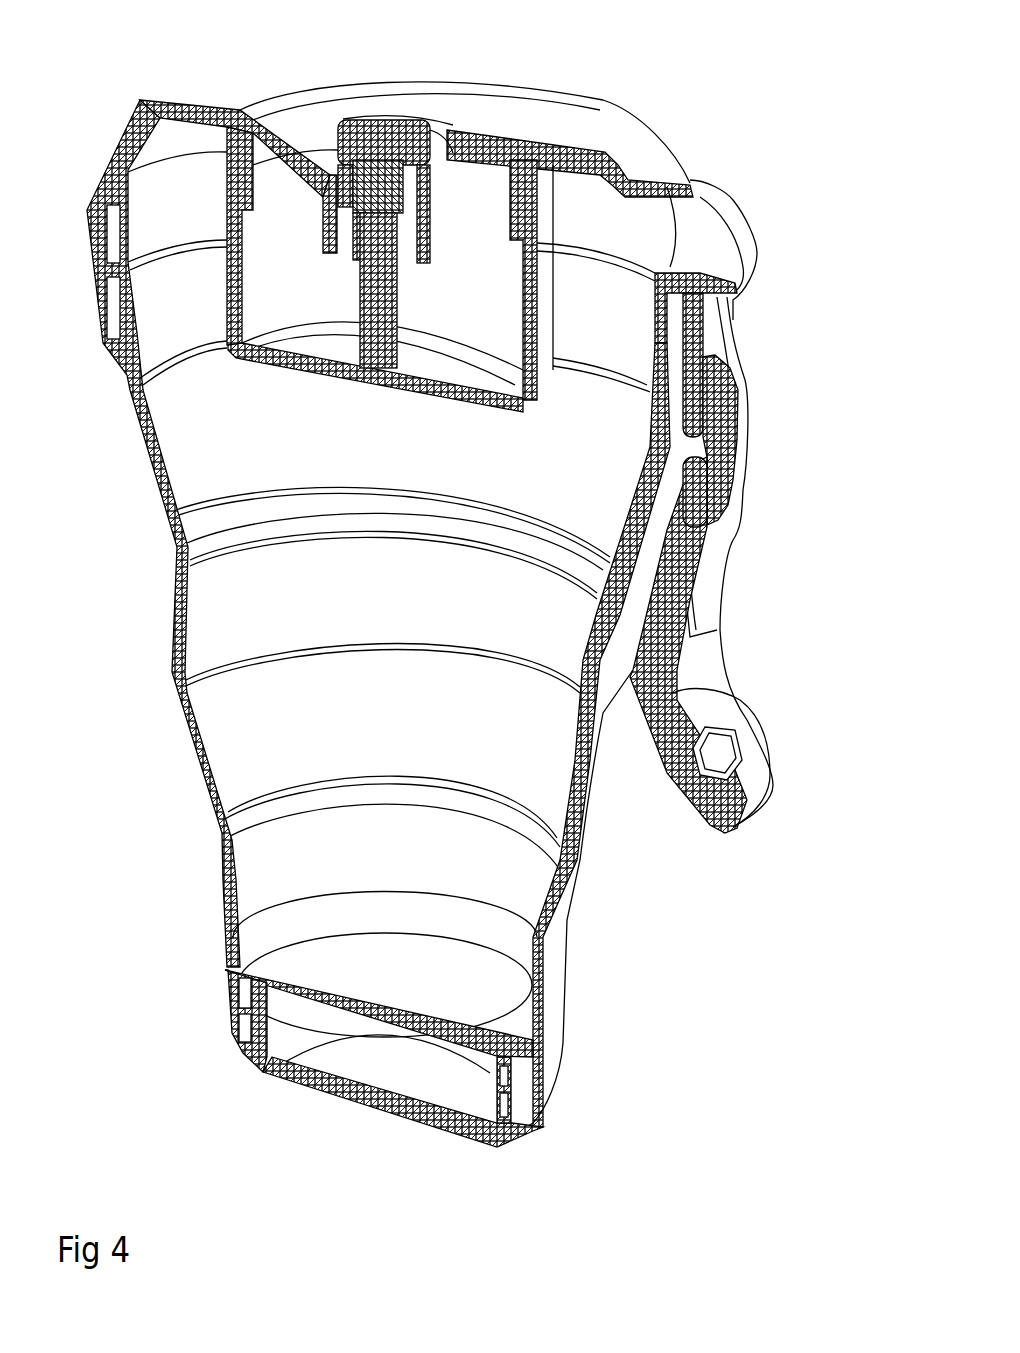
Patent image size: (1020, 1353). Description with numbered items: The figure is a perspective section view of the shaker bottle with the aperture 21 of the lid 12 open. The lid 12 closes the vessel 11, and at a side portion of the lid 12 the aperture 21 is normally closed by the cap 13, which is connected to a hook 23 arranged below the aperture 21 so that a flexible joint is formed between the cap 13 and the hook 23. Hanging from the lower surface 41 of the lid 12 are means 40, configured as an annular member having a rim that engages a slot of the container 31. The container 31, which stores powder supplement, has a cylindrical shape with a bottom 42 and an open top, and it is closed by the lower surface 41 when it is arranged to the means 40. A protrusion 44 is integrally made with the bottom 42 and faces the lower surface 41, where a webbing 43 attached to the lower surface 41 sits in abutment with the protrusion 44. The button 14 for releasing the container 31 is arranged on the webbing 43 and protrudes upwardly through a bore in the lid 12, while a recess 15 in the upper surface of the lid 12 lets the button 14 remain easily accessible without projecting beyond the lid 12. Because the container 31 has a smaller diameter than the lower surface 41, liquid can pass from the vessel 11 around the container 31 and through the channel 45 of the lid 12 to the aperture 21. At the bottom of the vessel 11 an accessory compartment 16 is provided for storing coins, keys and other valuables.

The vessel 11 is at (603, 713).
The lid 12 is at (613, 137).
The cap 13 is at (713, 670).
The button 14 is at (410, 130).
The recess 15 is at (297, 133).
The accessory compartment 16 is at (543, 1093).
The aperture 21 is at (747, 263).
The hook 23 is at (707, 520).
The container 31 is at (270, 300).
The means 40 is at (287, 187).
The lower surface 41 is at (493, 163).
The bottom 42 is at (320, 347).
The webbing 43 is at (327, 253).
The protrusion 44 is at (373, 367).
The channel 45 is at (687, 243).